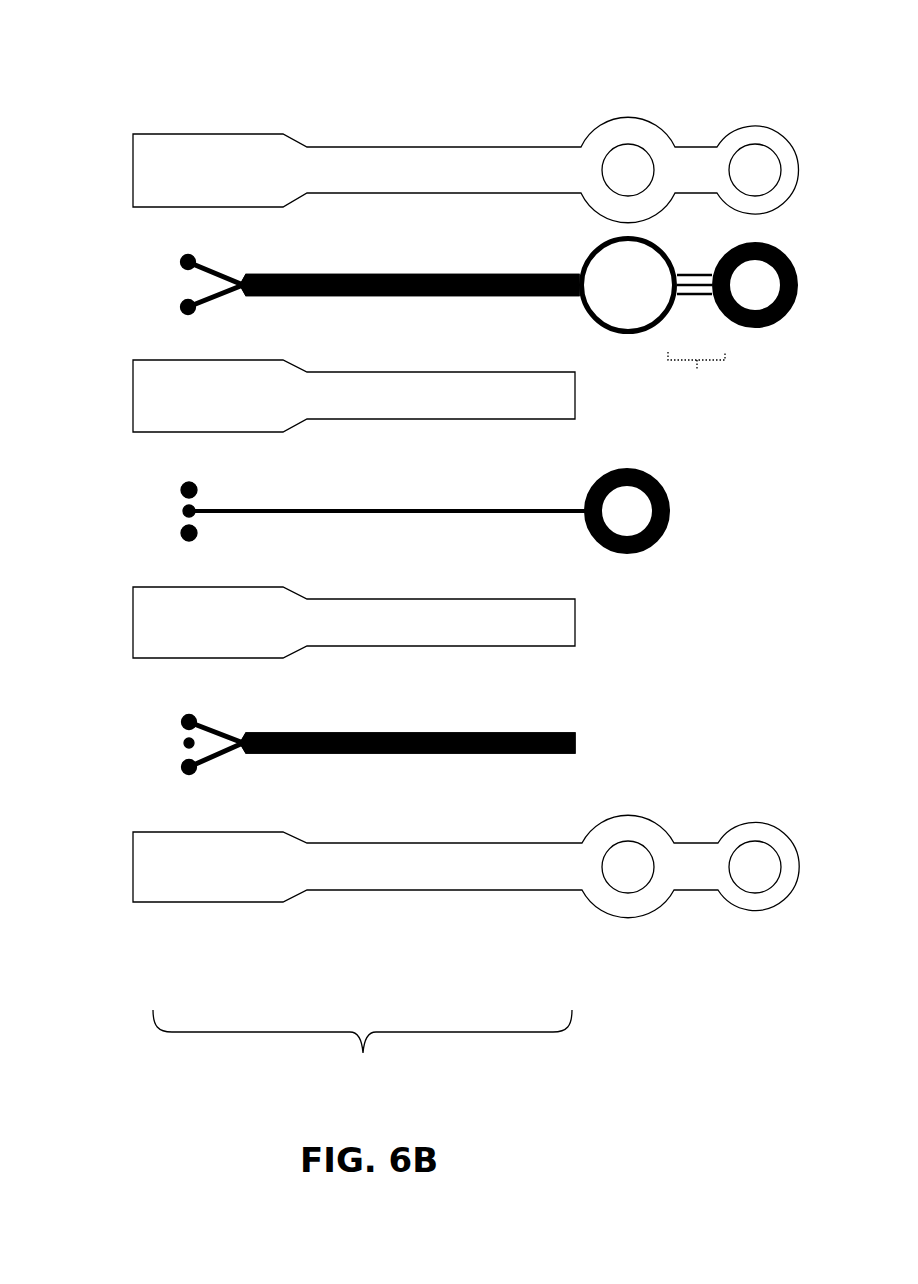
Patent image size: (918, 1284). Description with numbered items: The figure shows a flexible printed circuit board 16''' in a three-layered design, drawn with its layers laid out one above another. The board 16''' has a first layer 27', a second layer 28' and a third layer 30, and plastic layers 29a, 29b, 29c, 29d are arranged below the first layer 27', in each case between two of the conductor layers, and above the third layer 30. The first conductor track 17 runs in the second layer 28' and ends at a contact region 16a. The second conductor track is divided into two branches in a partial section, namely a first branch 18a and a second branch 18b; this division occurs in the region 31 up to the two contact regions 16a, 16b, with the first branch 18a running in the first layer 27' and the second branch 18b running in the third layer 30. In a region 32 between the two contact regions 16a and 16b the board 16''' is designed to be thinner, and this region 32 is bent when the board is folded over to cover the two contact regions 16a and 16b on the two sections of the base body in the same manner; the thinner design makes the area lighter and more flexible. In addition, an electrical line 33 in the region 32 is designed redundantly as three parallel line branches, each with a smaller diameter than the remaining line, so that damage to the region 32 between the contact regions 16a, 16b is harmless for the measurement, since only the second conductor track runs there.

The three-layer printed circuit board 16''' is at (86, 49).
The contact region 16a is at (638, 470).
The contact region 16b is at (723, 247).
The first conductor track 17 is at (465, 508).
The first branch of the second conductor track 18a is at (352, 663).
The second branch of the second conductor track 18b is at (343, 217).
The first layer 27' is at (306, 750).
The second layer 28' is at (315, 517).
The plastic layer 29a is at (125, 865).
The plastic layer 29b is at (125, 620).
The plastic layer 29c is at (125, 400).
The plastic layer 29d is at (117, 174).
The third layer 30 is at (125, 287).
The region 31 is at (362, 1042).
The region between the contact regions 32 is at (696, 367).
The electrical line 33 is at (692, 293).